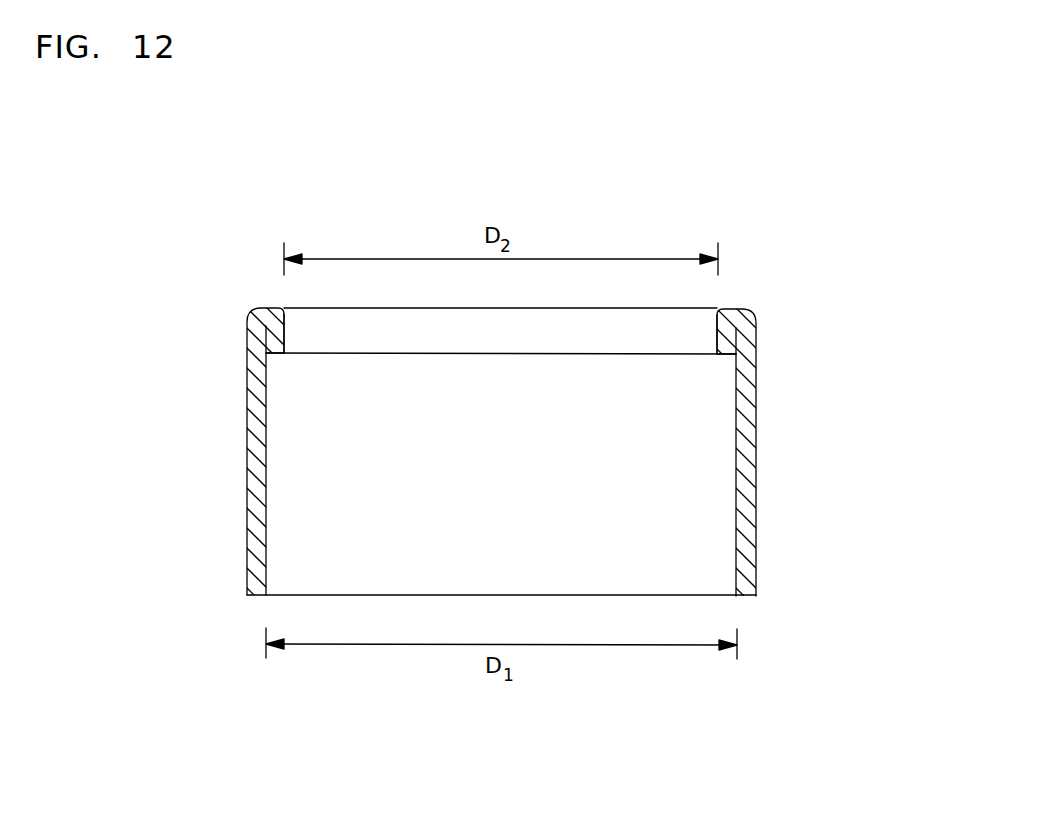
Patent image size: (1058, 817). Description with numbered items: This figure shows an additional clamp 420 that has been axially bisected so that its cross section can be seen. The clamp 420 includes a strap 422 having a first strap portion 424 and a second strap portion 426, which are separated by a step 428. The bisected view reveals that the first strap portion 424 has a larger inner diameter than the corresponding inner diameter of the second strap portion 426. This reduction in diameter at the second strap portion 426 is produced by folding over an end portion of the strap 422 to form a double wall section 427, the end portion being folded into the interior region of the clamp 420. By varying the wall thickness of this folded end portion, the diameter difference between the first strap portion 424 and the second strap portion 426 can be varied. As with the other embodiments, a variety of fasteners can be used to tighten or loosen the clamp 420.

The clamp 420 is at (812, 384).
The strap 422 is at (770, 511).
The first strap portion 424 is at (267, 553).
The second strap portion 426 is at (284, 338).
The double wall section 427 is at (283, 308).
The step 428 is at (277, 352).